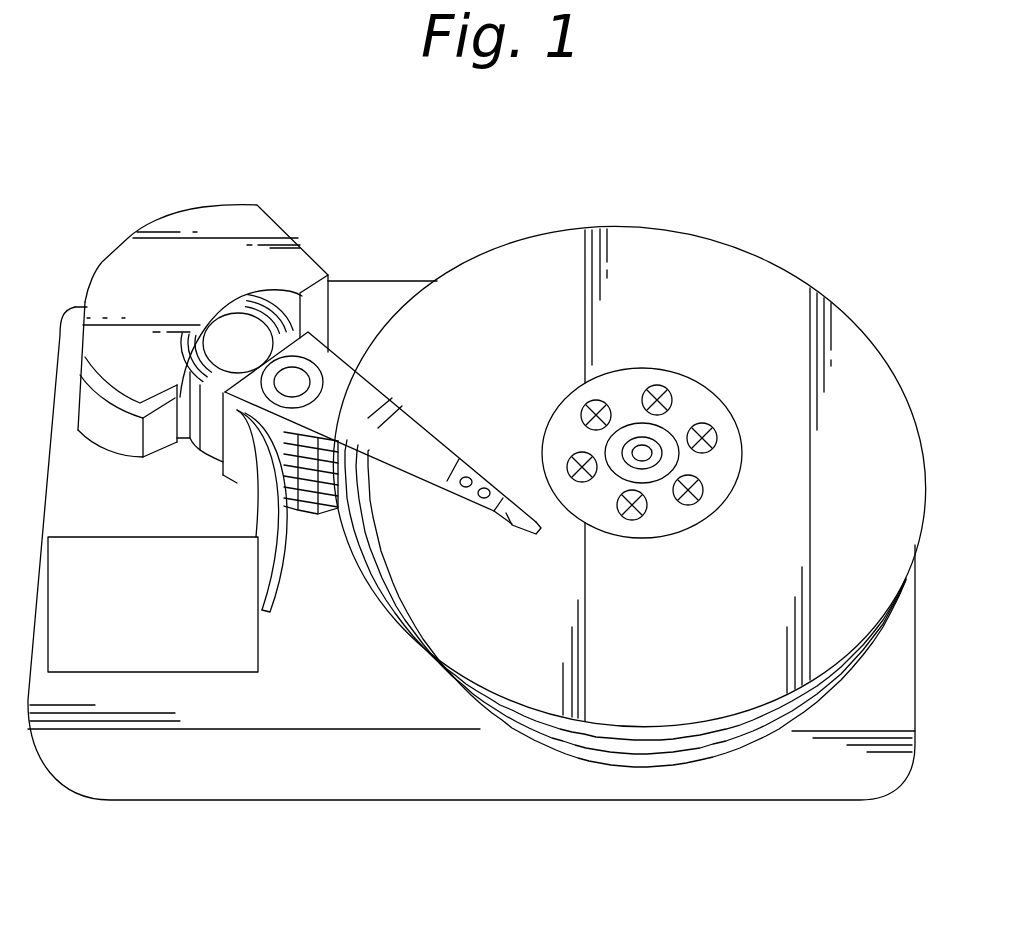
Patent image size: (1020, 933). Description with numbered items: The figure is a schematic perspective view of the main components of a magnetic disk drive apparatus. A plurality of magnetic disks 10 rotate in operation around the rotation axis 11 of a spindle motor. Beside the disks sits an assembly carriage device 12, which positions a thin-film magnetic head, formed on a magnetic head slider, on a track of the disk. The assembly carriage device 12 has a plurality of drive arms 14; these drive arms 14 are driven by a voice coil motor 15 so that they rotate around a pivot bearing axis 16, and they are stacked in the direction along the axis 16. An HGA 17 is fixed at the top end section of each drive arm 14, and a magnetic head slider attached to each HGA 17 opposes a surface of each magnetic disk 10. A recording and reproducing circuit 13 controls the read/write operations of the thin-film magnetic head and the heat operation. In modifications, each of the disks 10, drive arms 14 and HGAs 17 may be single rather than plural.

The magnetic disk 10 is at (815, 274).
The rotation axis 11 is at (658, 447).
The assembly carriage device 12 is at (229, 223).
The recording and reproducing circuit 13 is at (217, 673).
The drive arm 14 is at (365, 412).
The voice coil motor 15 is at (193, 424).
The pivot bearing axis 16 is at (297, 380).
The HGA 17 is at (512, 520).